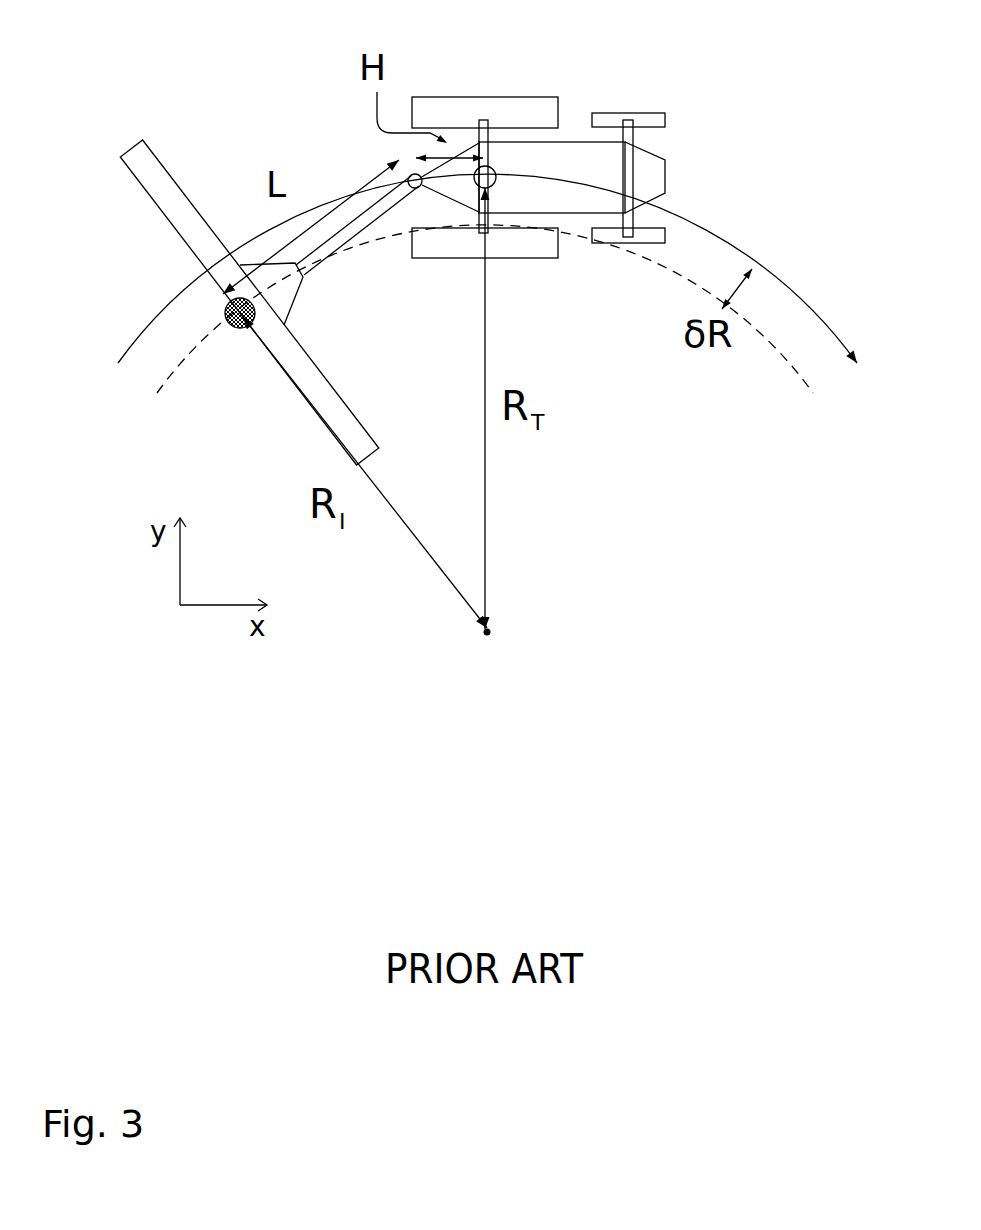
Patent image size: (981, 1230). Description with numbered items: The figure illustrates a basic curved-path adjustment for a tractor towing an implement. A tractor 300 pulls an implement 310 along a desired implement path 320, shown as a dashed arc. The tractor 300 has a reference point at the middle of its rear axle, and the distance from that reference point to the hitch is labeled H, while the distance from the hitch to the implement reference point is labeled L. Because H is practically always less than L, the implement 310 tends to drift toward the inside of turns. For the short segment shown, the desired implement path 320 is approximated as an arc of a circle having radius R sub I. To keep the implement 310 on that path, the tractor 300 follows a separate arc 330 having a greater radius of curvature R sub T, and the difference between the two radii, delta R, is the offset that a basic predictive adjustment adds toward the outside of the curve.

The tractor 300 is at (563, 168).
The implement 310 is at (147, 160).
The desired implement path 320 is at (787, 362).
The arc 330 is at (815, 312).